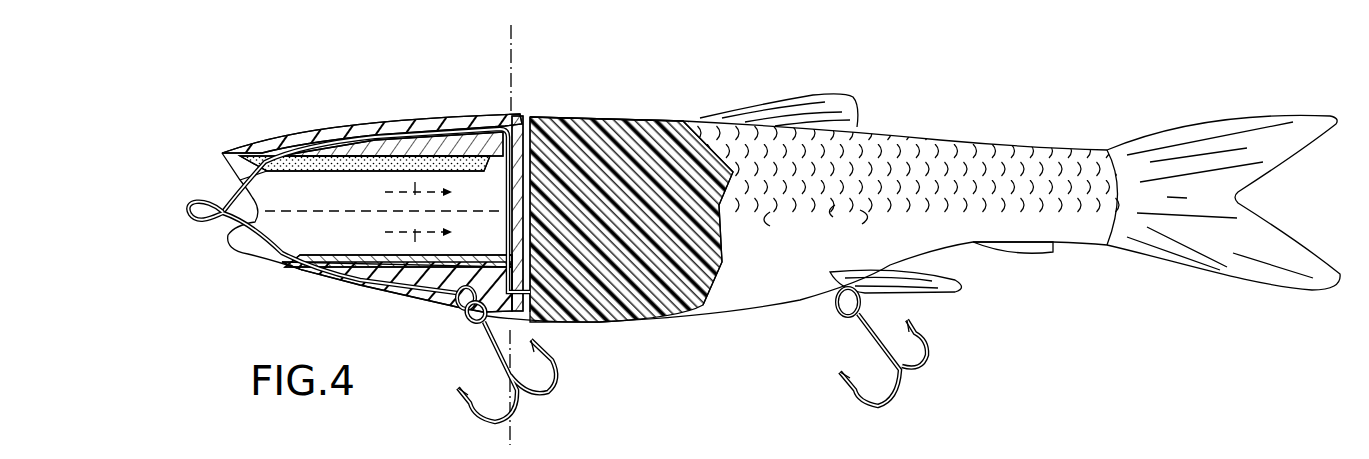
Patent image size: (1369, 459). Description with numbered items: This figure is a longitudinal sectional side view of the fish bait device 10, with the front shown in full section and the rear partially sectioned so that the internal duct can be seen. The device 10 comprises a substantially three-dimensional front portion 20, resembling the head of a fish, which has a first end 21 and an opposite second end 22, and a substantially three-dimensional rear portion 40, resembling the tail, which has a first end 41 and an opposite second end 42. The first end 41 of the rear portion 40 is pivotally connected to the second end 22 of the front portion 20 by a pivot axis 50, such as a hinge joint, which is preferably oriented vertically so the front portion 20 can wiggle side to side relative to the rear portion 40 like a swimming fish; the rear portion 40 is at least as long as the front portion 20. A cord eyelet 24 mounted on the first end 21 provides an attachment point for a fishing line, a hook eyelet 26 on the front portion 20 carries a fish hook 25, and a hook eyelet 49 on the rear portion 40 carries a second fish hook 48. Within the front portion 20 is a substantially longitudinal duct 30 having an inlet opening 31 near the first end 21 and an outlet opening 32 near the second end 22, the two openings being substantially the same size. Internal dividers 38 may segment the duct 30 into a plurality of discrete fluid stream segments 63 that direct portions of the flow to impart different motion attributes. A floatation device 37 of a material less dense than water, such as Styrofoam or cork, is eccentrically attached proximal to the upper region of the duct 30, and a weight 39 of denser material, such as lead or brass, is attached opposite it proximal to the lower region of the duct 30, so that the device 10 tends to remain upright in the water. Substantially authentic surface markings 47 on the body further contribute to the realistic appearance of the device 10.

The device 10 is at (1104, 326).
The front portion 20 is at (371, 108).
The first end 21 is at (229, 142).
The second end 22 is at (498, 106).
The cord eyelet 24 is at (196, 222).
The fish hook 25 is at (556, 368).
The hook eyelet 26 is at (462, 312).
The duct 30 is at (355, 200).
The inlet opening 31 is at (216, 182).
The outlet opening 32 is at (488, 193).
The floatation device 37 is at (306, 165).
The internal dividers 38 is at (307, 213).
The weight 39 is at (377, 272).
The rear portion 40 is at (958, 140).
The first end 41 is at (536, 108).
The second end 42 is at (1258, 113).
The surface markings 47 is at (873, 220).
The fish hook 48 is at (925, 362).
The hook eyelet 49 is at (834, 302).
The pivot axis 50 is at (522, 37).
The fluid stream segments 63 is at (415, 153).